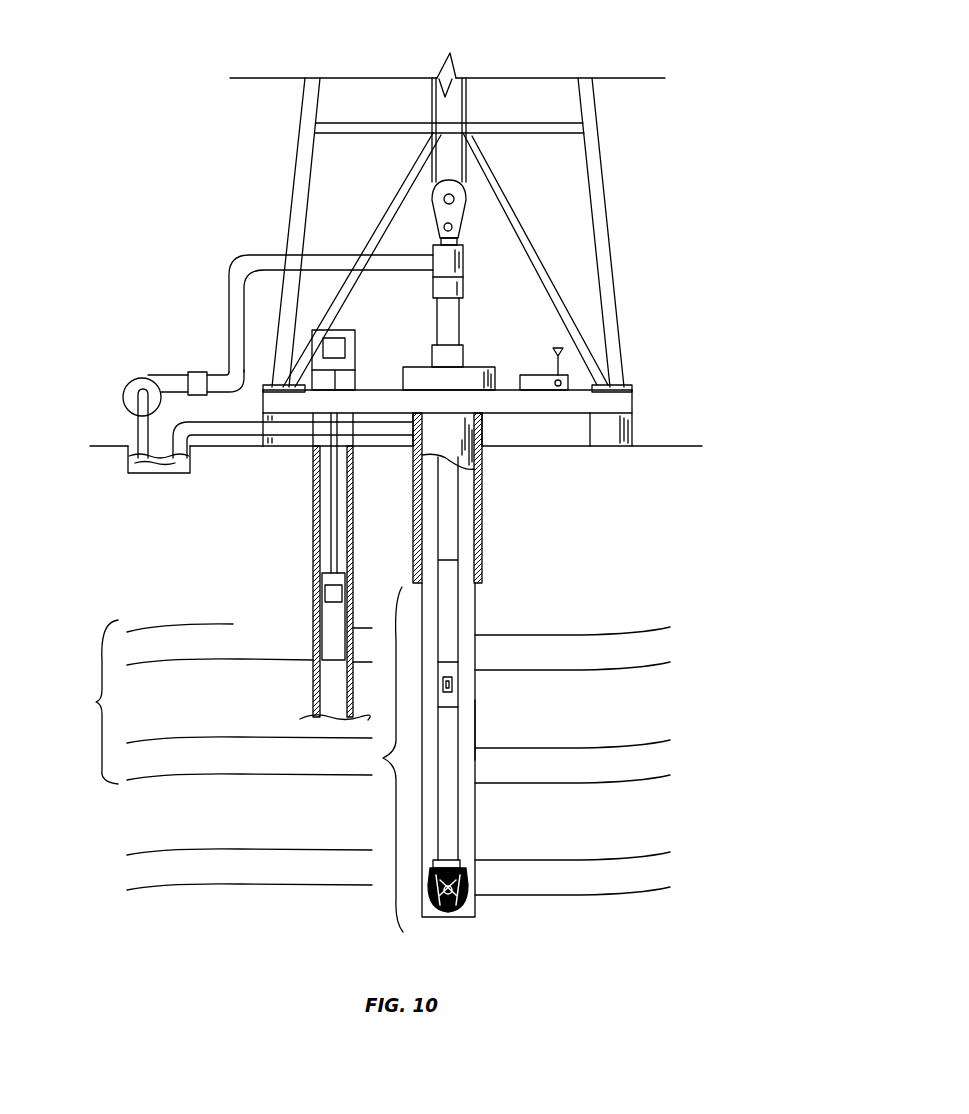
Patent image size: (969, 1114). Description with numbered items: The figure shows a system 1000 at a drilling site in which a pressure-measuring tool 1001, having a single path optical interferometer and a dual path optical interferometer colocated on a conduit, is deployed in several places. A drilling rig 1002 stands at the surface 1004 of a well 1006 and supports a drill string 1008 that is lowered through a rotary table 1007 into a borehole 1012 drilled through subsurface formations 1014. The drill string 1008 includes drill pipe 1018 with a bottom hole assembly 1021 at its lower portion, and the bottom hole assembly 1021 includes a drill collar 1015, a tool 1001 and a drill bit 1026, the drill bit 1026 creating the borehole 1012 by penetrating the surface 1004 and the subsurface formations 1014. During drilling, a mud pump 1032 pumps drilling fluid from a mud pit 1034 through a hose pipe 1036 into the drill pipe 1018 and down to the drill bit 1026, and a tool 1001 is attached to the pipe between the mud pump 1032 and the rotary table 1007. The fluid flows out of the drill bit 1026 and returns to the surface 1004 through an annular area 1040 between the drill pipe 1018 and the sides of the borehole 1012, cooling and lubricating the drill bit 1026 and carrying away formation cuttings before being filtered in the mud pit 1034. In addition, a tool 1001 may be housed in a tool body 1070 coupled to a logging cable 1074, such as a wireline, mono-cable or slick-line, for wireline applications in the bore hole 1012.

The system 1000 is at (148, 48).
The tool 1001 is at (195, 372).
The drilling rig 1002 is at (605, 170).
The surface 1004 is at (670, 446).
The well 1006 is at (508, 432).
The rotary table 1007 is at (425, 367).
The drill string 1008 is at (461, 508).
The borehole 1012 is at (315, 520).
The subsurface formations 1014 is at (354, 757).
The drill collar 1015 is at (448, 670).
The drill pipe 1018 is at (452, 625).
The bottom hole assembly 1021 is at (366, 759).
The drill bit 1026 is at (468, 900).
The mud pump 1032 is at (124, 388).
The mud pit 1034 is at (131, 450).
The hose pipe 1036 is at (229, 312).
The annular area 1040 is at (468, 740).
The tool body 1070 is at (322, 630).
The logging cable 1074 is at (332, 482).